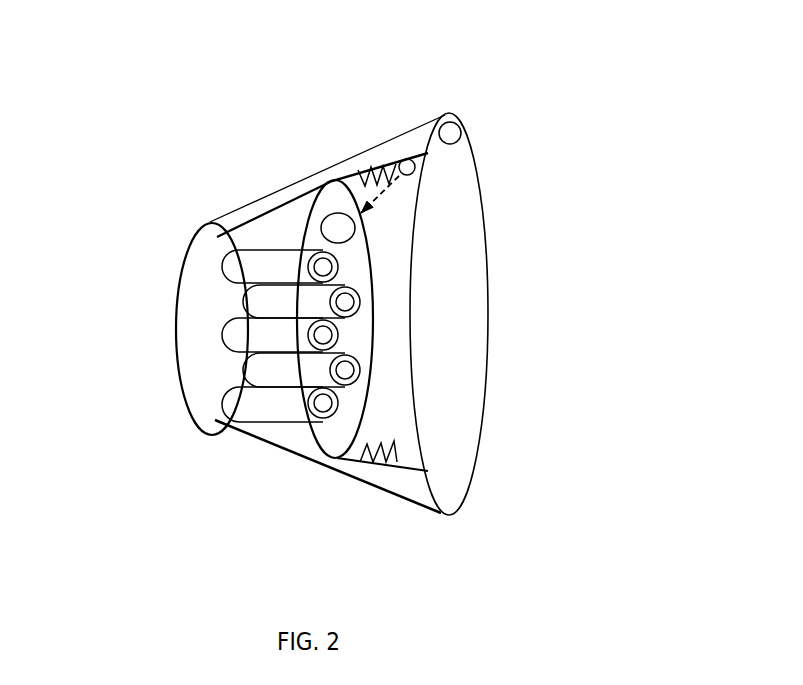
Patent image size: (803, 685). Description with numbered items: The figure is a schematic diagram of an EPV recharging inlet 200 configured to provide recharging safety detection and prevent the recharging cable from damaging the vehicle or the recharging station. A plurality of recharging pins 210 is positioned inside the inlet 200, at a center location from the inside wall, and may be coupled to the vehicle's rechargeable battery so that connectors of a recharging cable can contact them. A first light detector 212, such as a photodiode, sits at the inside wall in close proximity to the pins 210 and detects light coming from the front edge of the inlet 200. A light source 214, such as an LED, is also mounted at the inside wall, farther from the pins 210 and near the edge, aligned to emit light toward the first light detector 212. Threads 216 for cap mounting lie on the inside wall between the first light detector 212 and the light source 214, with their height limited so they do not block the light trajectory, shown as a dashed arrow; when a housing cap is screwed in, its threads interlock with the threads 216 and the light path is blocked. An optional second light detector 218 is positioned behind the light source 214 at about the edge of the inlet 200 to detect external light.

The EPV recharging inlet 200 is at (700, 118).
The recharging pins 210 is at (225, 300).
The first light detector 212 is at (321, 216).
The light source 214 is at (400, 157).
The threads 216 is at (370, 456).
The second light detector 218 is at (459, 125).